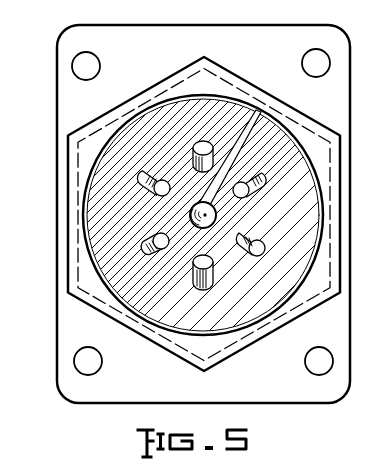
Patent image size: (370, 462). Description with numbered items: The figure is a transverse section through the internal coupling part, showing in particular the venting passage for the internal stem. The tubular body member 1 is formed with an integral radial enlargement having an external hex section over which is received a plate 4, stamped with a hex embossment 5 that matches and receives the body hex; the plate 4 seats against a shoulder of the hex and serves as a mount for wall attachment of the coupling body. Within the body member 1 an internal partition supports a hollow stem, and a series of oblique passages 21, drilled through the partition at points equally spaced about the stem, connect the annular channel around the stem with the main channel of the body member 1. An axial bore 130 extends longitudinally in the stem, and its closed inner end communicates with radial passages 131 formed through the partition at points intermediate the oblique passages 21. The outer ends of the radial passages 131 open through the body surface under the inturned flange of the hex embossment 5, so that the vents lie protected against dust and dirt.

The tubular body member 1 is at (89, 218).
The mounting plate 4 is at (67, 98).
The hex embossment 5 is at (164, 77).
The oblique passages 21 is at (192, 154).
The axial bore 130 is at (216, 213).
The radial passages 131 is at (243, 143).